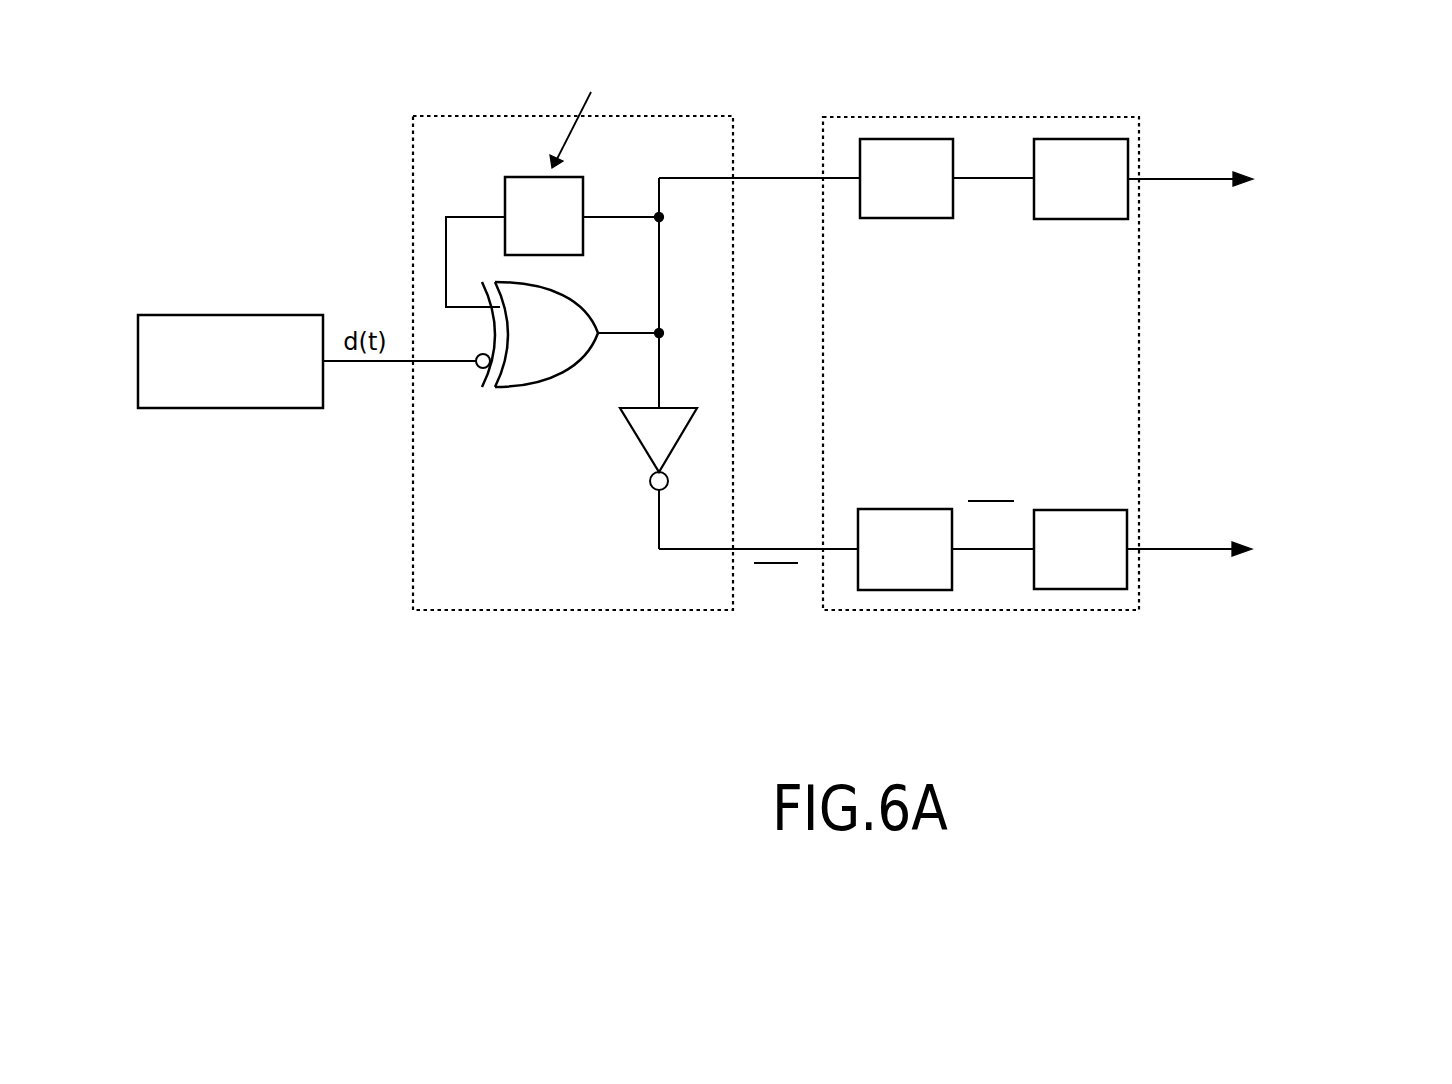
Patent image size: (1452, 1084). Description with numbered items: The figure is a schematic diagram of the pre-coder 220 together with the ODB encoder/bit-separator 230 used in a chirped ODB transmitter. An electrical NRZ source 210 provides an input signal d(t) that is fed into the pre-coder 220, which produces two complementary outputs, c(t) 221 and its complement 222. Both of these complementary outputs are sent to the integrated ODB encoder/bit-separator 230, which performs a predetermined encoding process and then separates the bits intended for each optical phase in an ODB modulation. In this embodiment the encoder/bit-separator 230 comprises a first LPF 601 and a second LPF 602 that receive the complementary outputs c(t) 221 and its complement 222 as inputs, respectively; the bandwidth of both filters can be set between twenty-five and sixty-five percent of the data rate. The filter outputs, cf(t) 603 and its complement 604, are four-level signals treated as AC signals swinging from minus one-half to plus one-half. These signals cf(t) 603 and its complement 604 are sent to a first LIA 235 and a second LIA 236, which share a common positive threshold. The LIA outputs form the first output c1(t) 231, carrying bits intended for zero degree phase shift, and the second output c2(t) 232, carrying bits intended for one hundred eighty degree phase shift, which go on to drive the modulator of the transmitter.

The electrical NRZ source 210 is at (207, 394).
The pre-coder 220 is at (444, 601).
The first complementary output c(t) 221 is at (780, 122).
The second complementary output (complement of c(t)) 222 is at (779, 605).
The integrated ODB encoder/bit-separator 230 is at (967, 376).
The first output c1(t) 231 is at (1188, 133).
The second output c2(t) 232 is at (1188, 502).
The first LIA 235 is at (1060, 208).
The second LIA 236 is at (1059, 579).
The first LPF 601 is at (885, 207).
The second LPF 602 is at (884, 579).
The output signal cf(t) 603 is at (990, 232).
The output signal (complement of cf(t)) 604 is at (990, 485).